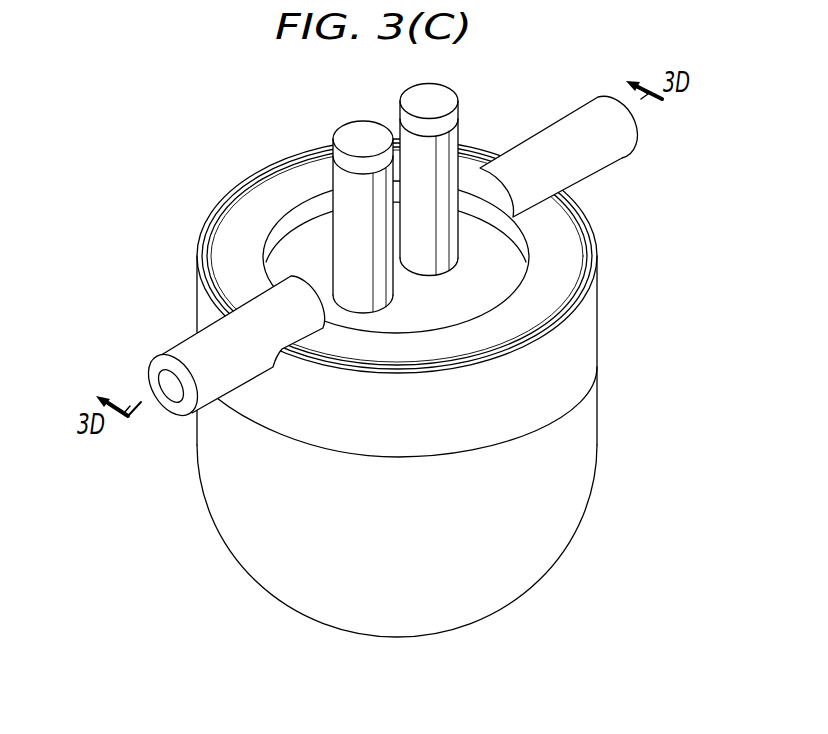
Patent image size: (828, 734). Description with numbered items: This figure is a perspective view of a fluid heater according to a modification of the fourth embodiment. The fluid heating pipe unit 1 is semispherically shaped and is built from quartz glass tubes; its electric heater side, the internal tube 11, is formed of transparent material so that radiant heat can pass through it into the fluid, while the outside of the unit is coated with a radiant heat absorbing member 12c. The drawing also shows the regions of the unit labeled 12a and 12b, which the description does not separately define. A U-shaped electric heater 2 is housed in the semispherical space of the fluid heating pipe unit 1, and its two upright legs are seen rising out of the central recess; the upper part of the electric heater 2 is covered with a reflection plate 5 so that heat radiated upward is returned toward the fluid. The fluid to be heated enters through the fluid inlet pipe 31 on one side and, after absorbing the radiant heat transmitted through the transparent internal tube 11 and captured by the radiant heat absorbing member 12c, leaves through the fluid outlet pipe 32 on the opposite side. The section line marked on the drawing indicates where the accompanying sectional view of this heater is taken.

The fluid heating pipe unit 1 is at (576, 475).
The electric heater 2 is at (364, 128).
The reflection plate 5 is at (287, 241).
The internal tube 11 is at (531, 229).
The bottom wall 12a is at (259, 558).
The outer rim 12b is at (234, 189).
The radiant heat absorbing member 12c is at (296, 160).
The fluid inlet pipe 31 is at (182, 345).
The fluid outlet pipe 32 is at (553, 124).